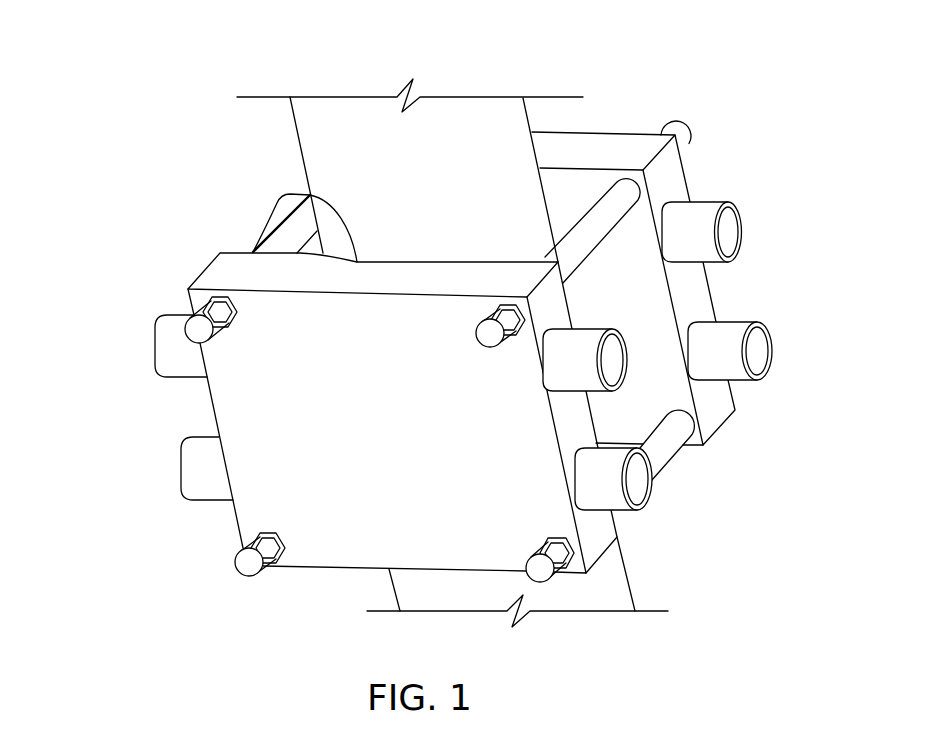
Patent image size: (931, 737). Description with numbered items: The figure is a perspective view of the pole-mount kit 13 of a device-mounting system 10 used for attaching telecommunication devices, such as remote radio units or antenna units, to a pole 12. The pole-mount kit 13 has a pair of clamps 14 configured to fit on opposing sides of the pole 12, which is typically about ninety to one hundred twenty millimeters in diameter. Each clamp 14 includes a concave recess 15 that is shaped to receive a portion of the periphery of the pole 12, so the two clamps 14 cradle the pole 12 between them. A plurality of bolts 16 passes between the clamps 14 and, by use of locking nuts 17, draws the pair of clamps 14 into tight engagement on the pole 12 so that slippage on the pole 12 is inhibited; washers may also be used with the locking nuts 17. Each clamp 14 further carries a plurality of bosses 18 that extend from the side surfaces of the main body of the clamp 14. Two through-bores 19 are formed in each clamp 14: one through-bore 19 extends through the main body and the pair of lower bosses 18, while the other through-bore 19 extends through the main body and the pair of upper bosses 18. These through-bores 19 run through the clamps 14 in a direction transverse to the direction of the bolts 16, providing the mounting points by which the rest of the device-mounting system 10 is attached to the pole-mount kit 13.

The device-mounting system 10 is at (614, 90).
The pole 12 is at (372, 125).
The pole-mount kit 13 is at (670, 530).
The clamp 14 is at (670, 163).
The concave recess 15 is at (280, 193).
The bolt 16 is at (263, 237).
The locking nut 17 is at (205, 293).
The boss 18 is at (155, 347).
The through-bore 19 is at (736, 242).